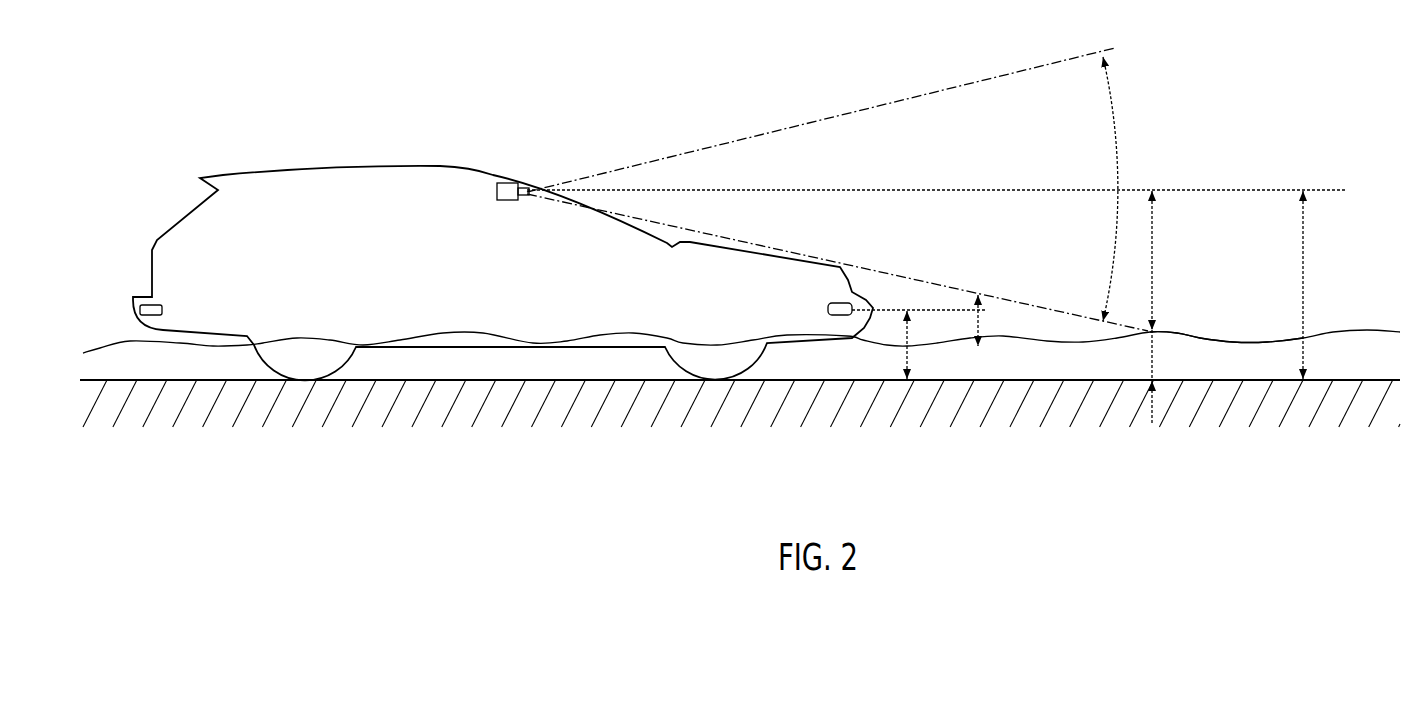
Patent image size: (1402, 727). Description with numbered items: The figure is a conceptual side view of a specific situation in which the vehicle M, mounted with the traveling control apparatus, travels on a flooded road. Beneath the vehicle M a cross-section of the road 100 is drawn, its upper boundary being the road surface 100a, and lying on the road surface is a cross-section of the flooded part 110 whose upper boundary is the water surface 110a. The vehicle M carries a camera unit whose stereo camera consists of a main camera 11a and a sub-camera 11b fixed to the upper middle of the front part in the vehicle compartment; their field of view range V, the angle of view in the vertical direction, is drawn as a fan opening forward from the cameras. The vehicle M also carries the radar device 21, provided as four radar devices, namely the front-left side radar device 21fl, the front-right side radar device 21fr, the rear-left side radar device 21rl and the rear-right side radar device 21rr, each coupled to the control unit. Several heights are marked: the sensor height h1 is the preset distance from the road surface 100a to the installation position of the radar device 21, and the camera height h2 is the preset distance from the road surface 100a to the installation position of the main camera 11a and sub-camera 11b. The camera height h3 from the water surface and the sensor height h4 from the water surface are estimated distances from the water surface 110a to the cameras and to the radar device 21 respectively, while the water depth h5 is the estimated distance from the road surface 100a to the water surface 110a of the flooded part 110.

The vehicle M is at (394, 142).
The main camera 11a is at (543, 213).
The sub-camera 11b is at (543, 218).
The radar device 21 is at (496, 277).
The rear-right side radar device 21rr is at (203, 277).
The rear-left side radar device 21rl is at (215, 272).
The front-right side radar device 21fr is at (775, 281).
The front-left side radar device 21fl is at (827, 309).
The field of view range V is at (1112, 113).
The sensor height h1 is at (912, 330).
The camera height h2 is at (1324, 285).
The camera height from the water surface h3 is at (1171, 260).
The sensor height from the water surface h4 is at (980, 322).
The water depth h5 is at (1169, 376).
The road 100 is at (1320, 413).
The road surface 100a is at (1271, 374).
The flooded part 110 is at (1087, 365).
The water surface 110a is at (1223, 335).